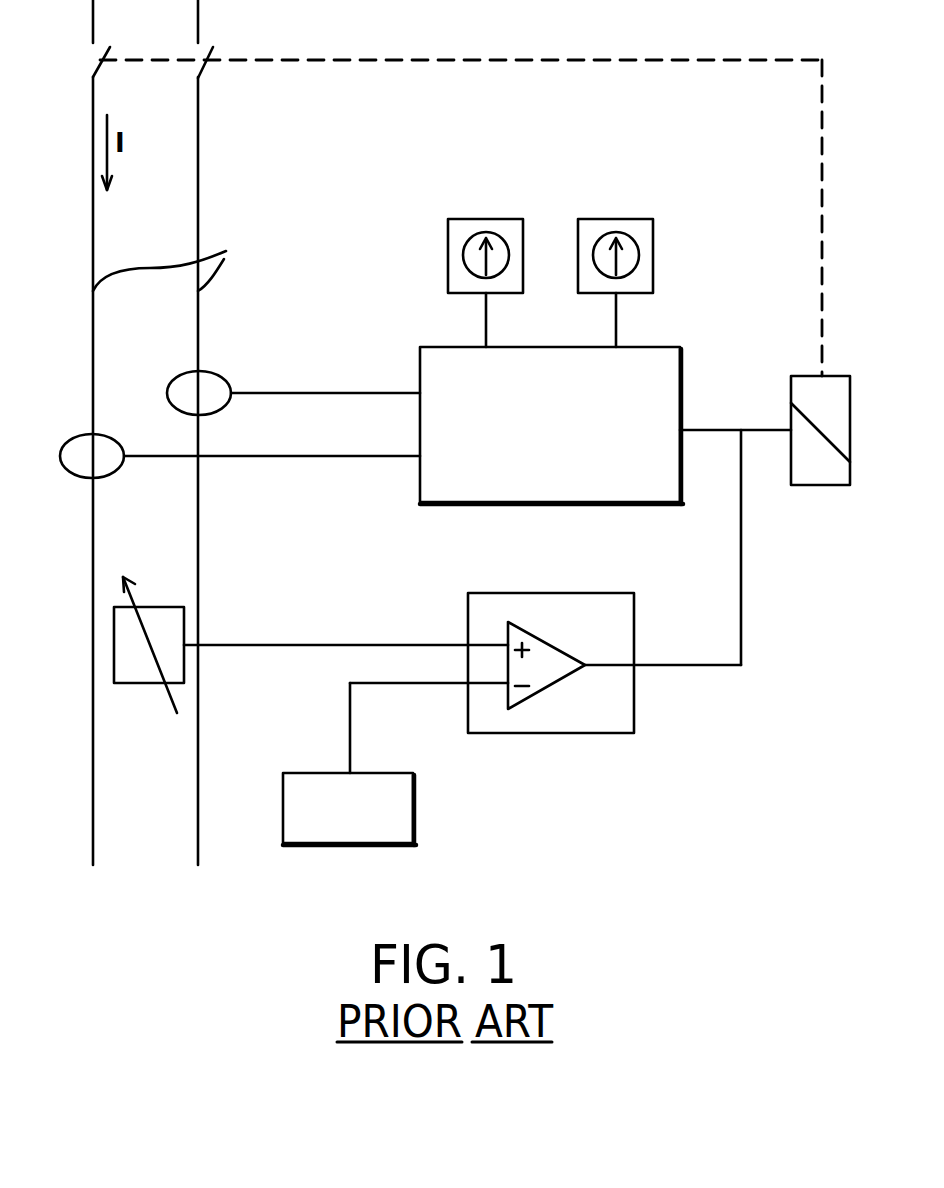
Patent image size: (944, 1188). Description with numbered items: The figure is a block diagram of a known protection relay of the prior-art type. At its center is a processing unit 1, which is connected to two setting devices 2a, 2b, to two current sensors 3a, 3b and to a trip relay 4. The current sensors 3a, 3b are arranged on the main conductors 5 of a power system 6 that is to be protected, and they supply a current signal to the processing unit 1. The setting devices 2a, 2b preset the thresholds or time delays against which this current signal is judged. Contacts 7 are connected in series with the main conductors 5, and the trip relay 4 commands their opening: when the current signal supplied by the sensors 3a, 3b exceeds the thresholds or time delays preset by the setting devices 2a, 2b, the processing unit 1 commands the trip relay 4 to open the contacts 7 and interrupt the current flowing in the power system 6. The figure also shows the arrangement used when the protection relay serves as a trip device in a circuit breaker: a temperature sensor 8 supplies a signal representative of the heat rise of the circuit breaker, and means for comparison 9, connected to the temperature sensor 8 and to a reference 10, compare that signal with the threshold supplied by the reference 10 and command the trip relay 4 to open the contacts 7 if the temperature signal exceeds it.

The processing unit 1 is at (682, 351).
The setting device 2a is at (448, 240).
The setting device 2b is at (654, 242).
The current sensor 3a is at (176, 380).
The current sensor 3b is at (116, 472).
The trip relay 4 is at (852, 433).
The main conductors 5 is at (171, 263).
The power system 6 is at (82, 752).
The contacts 7 is at (207, 58).
The temperature sensor 8 is at (156, 607).
The means for comparison 9 is at (636, 715).
The reference 10 is at (415, 810).